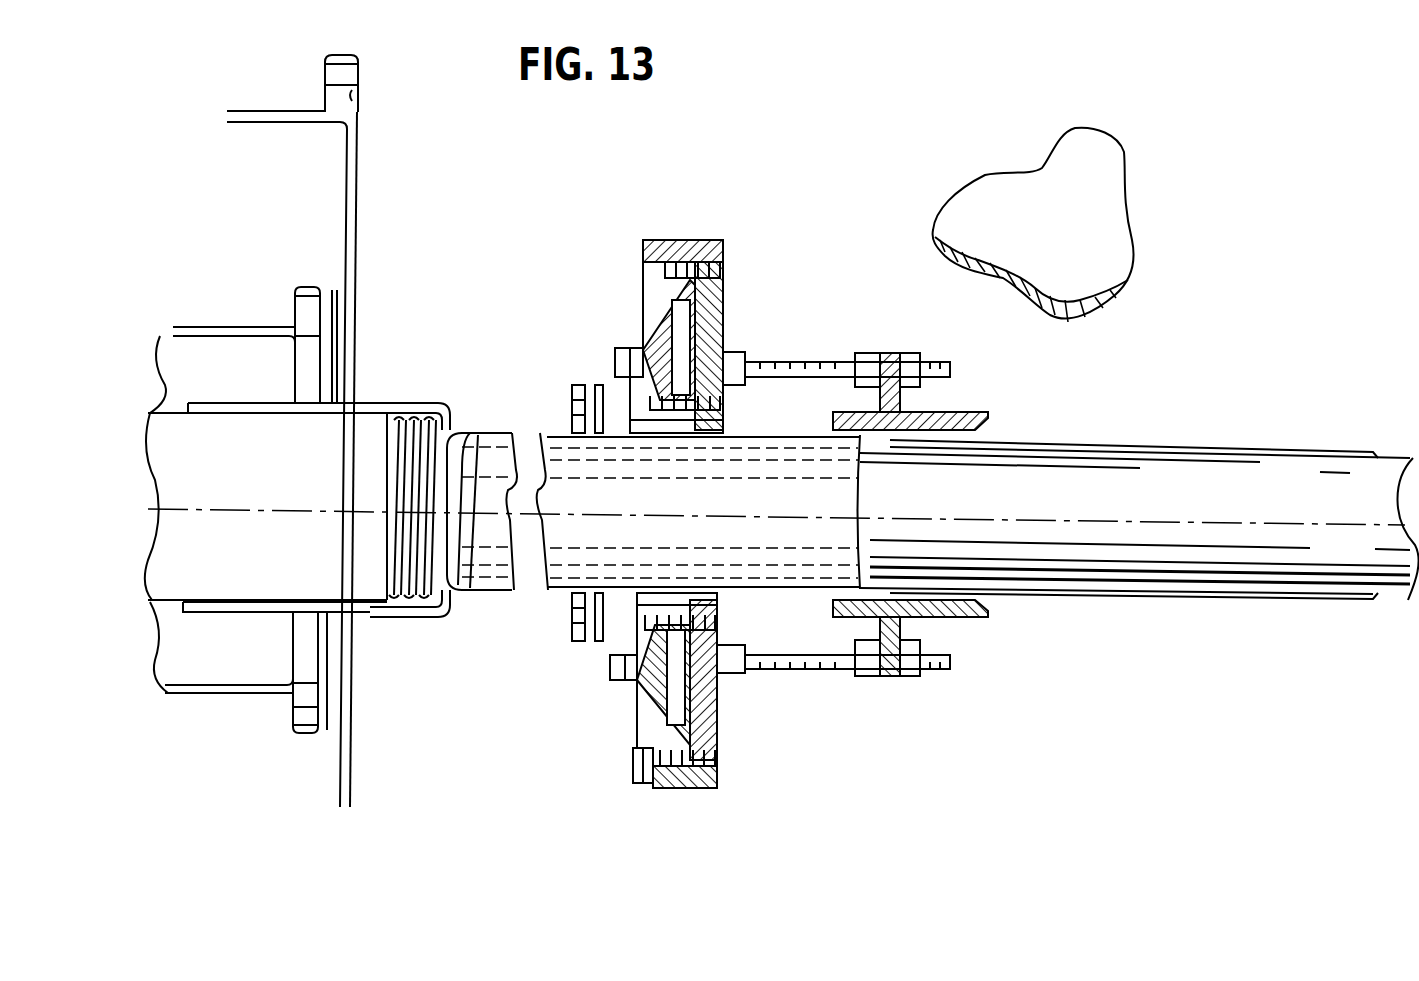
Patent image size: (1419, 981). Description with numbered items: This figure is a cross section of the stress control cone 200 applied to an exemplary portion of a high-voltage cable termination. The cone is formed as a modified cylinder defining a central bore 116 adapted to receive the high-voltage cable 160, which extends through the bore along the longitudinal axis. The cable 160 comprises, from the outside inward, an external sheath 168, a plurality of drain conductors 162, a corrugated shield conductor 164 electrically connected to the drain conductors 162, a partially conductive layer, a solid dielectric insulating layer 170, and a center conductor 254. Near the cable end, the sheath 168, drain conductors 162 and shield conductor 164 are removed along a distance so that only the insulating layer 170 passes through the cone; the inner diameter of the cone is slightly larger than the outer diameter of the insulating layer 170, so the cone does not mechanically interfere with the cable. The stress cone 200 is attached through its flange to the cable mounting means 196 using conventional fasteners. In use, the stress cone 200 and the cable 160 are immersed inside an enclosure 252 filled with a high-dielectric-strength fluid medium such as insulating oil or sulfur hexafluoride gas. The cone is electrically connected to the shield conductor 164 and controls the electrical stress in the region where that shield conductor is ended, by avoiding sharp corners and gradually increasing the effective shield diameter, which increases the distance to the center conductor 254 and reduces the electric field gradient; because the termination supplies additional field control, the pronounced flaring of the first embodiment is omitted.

The central bore 116 is at (1266, 450).
The high-voltage cable 160 is at (266, 498).
The drain conductors 162 is at (403, 400).
The corrugated shield conductor 164 is at (453, 430).
The external sheath 168 is at (370, 587).
The solid dielectric insulating layer 170 is at (863, 540).
The cable mounting means 196 is at (643, 335).
The stress control cone 200 is at (960, 412).
The enclosure 252 is at (1118, 222).
The center conductor 254 is at (863, 493).